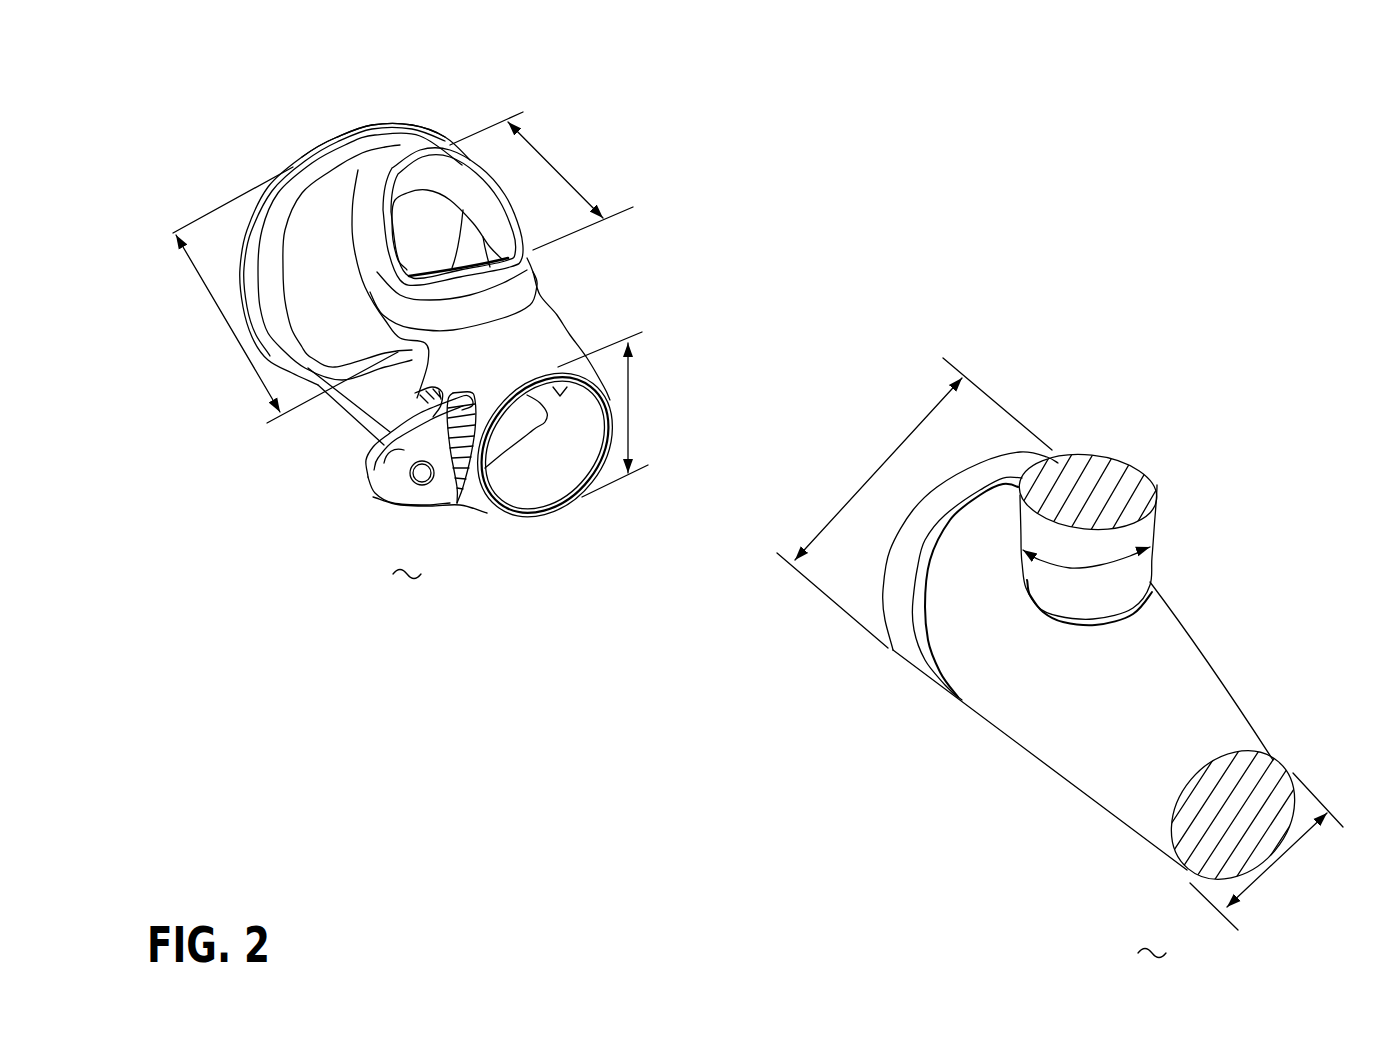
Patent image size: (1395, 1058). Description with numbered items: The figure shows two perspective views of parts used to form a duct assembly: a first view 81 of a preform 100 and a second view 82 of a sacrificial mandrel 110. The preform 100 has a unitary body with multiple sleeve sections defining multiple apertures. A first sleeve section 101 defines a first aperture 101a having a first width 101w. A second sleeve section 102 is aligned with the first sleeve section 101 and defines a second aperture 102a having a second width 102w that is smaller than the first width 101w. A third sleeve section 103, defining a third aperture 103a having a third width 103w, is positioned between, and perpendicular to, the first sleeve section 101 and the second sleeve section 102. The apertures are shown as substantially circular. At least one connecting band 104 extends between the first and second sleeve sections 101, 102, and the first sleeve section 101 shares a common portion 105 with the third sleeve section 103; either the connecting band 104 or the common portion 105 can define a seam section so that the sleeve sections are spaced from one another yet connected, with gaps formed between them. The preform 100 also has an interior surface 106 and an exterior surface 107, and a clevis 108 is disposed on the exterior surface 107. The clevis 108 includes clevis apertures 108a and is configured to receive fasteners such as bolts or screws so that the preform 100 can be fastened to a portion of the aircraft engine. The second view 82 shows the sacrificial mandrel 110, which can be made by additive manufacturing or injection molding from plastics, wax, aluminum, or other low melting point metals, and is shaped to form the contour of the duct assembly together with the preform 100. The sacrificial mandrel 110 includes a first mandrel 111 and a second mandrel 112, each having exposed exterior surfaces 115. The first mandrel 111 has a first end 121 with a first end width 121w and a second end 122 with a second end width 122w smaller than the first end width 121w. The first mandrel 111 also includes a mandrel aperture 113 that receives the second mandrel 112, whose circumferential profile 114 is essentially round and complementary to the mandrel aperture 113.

The preform 100 is at (262, 143).
The first sleeve section 101 is at (342, 138).
The first aperture 101a is at (375, 127).
The first width 101w is at (223, 315).
The third sleeve section 103 is at (427, 172).
The third aperture 103a is at (500, 277).
The third width 103w is at (543, 179).
The common portion 105 is at (532, 327).
The exterior surface 107 is at (538, 353).
The second sleeve section 102 is at (523, 523).
The second aperture 102a is at (487, 513).
The second width 102w is at (628, 412).
The interior surface 106 is at (560, 478).
The connecting band 104 is at (335, 413).
The clevis 108 is at (363, 467).
The clevis apertures 108a is at (418, 480).
The first view 81 is at (407, 558).
The sacrificial mandrel 110 is at (1060, 795).
The first mandrel 111 is at (1163, 687).
The second mandrel 112 is at (1097, 487).
The mandrel aperture 113 is at (1107, 620).
The circumferential profile 114 is at (1100, 563).
The exposed exterior surfaces 115 is at (1133, 580).
The first end 121 is at (883, 587).
The first end width 121w is at (882, 467).
The second end 122 is at (1247, 790).
The second end width 122w is at (1280, 860).
The second view 82 is at (1152, 937).